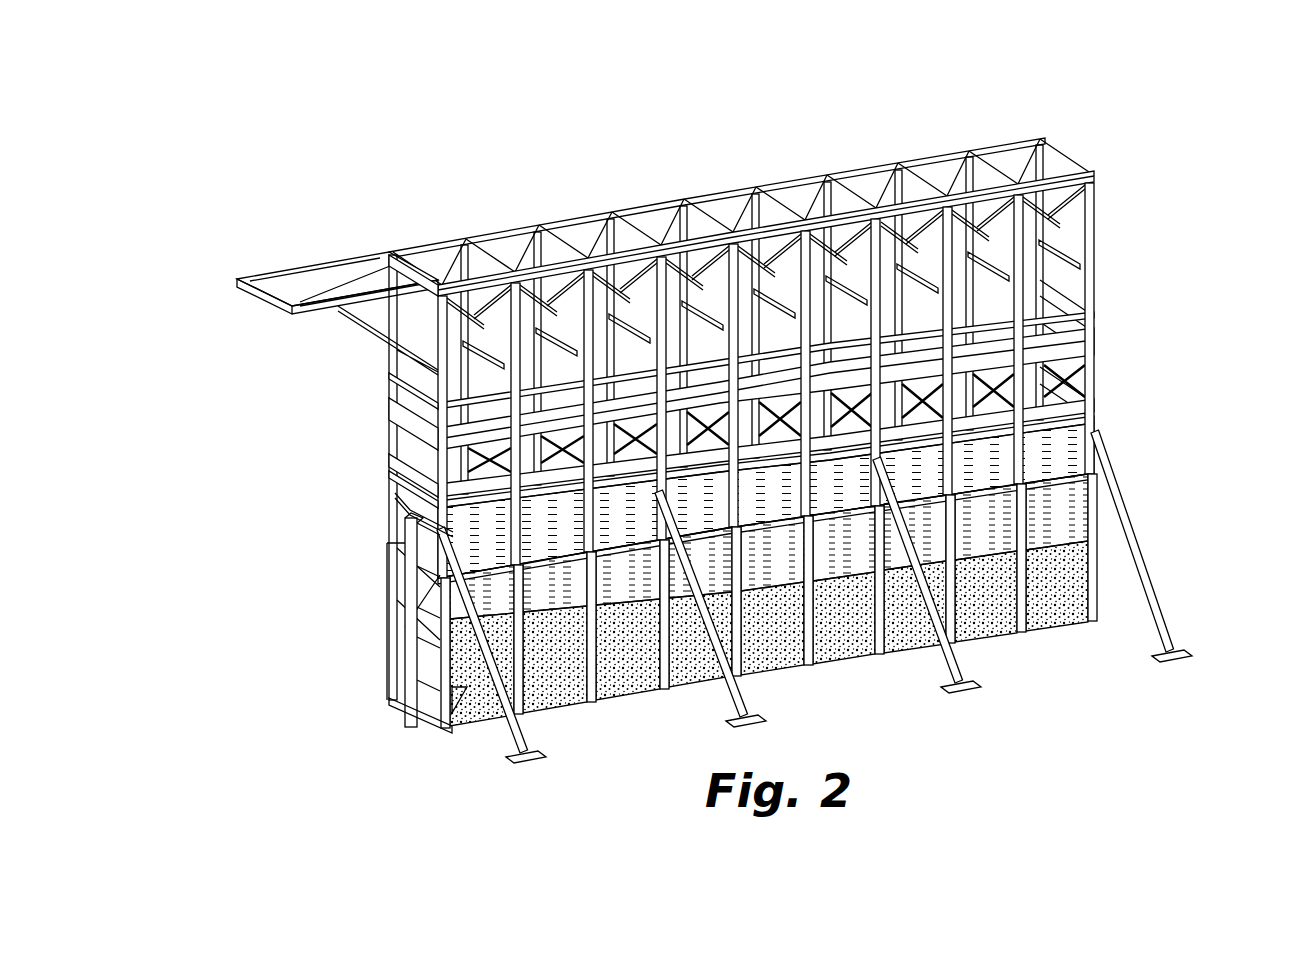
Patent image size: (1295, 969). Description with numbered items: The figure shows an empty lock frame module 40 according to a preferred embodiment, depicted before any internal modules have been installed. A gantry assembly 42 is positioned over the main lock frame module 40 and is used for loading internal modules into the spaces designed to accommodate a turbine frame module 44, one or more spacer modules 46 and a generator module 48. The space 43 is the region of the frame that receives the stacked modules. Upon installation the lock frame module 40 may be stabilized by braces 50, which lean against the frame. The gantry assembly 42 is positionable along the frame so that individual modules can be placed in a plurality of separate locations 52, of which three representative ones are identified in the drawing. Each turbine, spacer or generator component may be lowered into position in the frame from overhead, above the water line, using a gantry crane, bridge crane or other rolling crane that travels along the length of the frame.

The lock frame module 40 is at (741, 421).
The gantry assembly 42 is at (266, 300).
The space 43 is at (353, 519).
The turbine frame module 44 is at (423, 735).
The spacer module 46 is at (490, 593).
The generator module 48 is at (408, 508).
The braces 50 is at (1149, 574).
The separate locations 52 is at (853, 270).